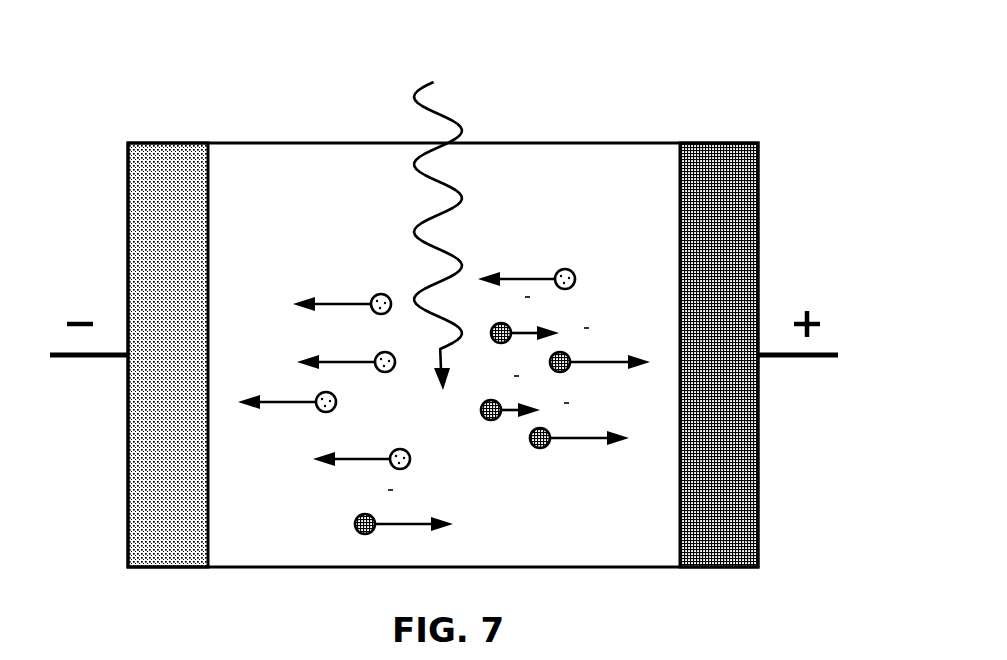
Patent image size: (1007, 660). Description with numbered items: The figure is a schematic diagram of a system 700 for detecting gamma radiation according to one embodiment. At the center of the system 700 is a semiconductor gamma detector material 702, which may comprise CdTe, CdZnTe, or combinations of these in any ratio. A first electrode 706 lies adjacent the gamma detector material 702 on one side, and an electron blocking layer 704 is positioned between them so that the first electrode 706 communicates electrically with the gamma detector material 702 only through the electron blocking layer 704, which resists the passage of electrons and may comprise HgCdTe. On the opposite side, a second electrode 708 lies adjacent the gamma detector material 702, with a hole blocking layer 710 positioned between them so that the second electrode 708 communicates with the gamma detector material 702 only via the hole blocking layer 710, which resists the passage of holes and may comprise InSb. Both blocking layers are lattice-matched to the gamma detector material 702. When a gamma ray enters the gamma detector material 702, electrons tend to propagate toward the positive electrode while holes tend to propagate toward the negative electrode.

The system 700 is at (449, 308).
The semiconductor gamma detector material 702 is at (307, 203).
The electron blocking layer 704 is at (168, 230).
The first electrode 706 is at (100, 360).
The second electrode 708 is at (797, 360).
The hole blocking layer 710 is at (708, 250).